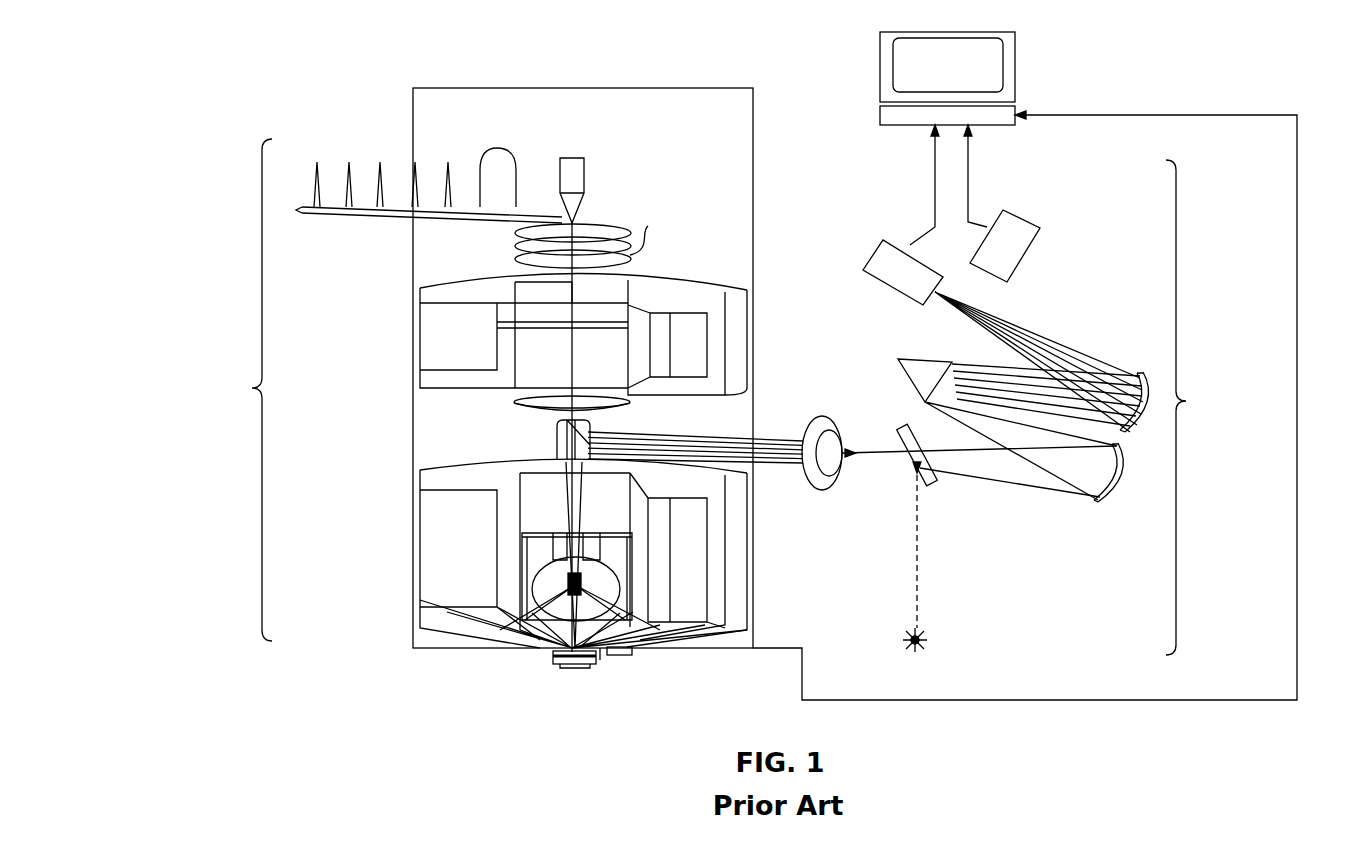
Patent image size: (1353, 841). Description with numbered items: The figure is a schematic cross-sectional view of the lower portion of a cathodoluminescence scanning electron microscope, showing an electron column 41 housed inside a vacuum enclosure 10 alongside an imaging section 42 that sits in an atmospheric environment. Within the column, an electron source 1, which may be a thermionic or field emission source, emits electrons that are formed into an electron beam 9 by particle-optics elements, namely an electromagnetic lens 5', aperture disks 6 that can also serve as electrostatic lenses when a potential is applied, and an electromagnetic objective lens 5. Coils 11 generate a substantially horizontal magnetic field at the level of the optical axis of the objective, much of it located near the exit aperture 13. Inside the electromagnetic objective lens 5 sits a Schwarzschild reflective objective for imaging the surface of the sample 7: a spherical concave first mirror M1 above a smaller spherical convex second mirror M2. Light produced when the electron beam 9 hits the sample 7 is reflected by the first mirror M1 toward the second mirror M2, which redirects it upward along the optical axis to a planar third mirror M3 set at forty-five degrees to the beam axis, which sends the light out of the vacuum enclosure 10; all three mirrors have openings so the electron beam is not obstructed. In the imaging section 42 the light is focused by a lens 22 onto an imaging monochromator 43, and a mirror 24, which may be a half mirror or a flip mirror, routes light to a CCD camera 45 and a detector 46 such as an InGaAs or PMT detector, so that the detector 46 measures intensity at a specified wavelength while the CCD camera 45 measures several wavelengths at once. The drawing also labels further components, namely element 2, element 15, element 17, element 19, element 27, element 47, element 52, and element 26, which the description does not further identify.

The vacuum enclosure 10 is at (475, 88).
The sample holder comb 2 is at (497, 148).
The electron source 1 is at (564, 157).
The aperture disks 6 is at (586, 239).
The electromagnetic lens 5' is at (583, 317).
The electron beam 9 is at (570, 380).
The third mirror M3 is at (556, 441).
The electromagnetic objective lens 5 is at (583, 540).
The coils 11 is at (440, 538).
The first mirror M1 is at (560, 503).
The aperture 15 is at (590, 532).
The second mirror M2 is at (487, 650).
The sample 7 is at (553, 665).
The sample holder 47 is at (592, 668).
The exit aperture 13 is at (599, 667).
The stage support 19 is at (630, 657).
The right block 17 is at (687, 640).
The electron column 41 is at (250, 388).
The imaging section 42 is at (1190, 404).
The lens 22 is at (806, 423).
The beam splitter 27 is at (900, 432).
The mirror 24 is at (960, 326).
The detector 46 is at (912, 290).
The CCD camera 45 is at (995, 252).
The controller 52 is at (939, 88).
The imaging monochromator 43 is at (1128, 549).
The excitation light source 26 is at (923, 642).